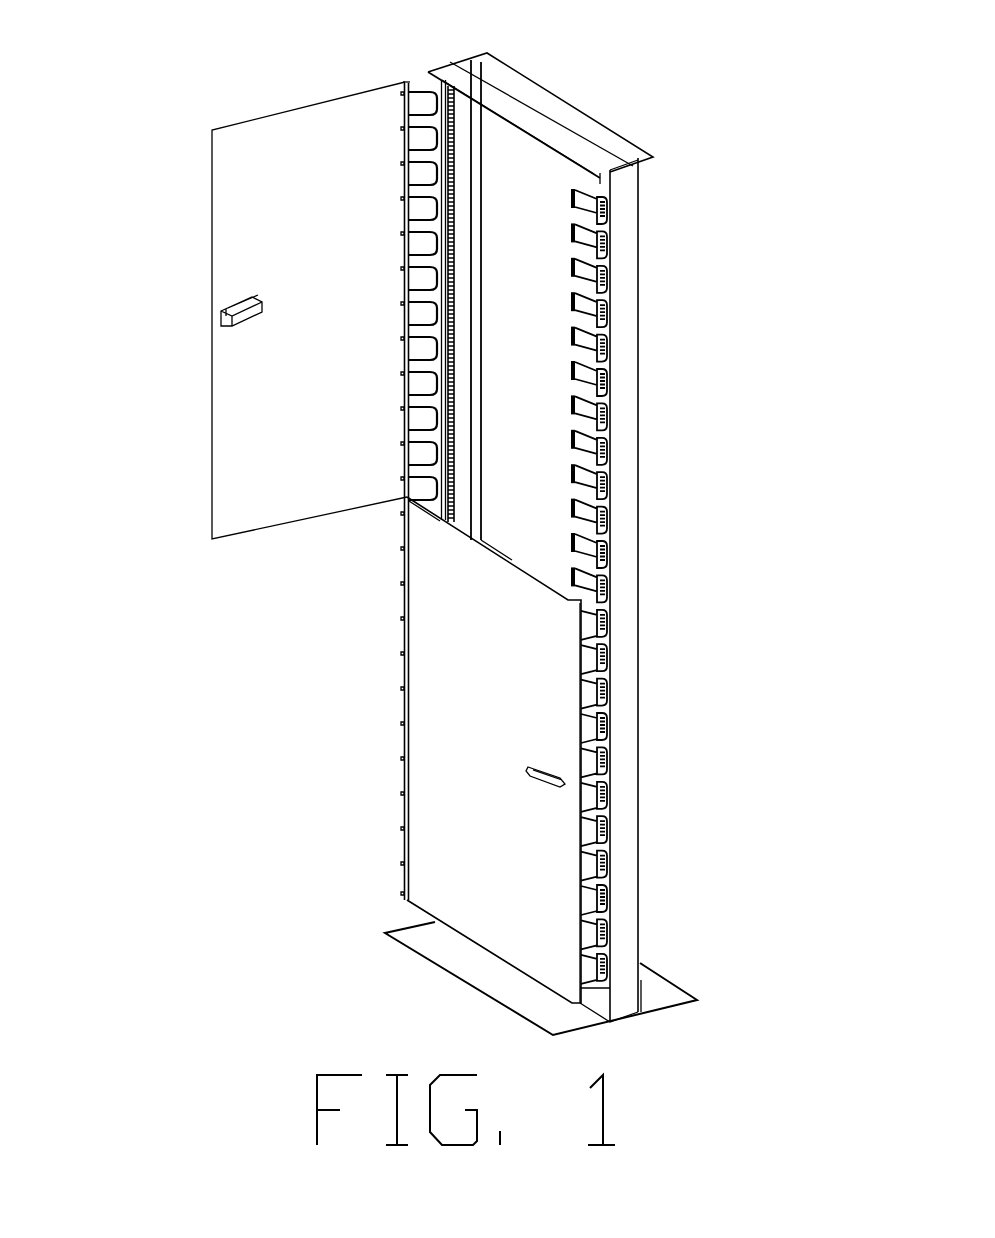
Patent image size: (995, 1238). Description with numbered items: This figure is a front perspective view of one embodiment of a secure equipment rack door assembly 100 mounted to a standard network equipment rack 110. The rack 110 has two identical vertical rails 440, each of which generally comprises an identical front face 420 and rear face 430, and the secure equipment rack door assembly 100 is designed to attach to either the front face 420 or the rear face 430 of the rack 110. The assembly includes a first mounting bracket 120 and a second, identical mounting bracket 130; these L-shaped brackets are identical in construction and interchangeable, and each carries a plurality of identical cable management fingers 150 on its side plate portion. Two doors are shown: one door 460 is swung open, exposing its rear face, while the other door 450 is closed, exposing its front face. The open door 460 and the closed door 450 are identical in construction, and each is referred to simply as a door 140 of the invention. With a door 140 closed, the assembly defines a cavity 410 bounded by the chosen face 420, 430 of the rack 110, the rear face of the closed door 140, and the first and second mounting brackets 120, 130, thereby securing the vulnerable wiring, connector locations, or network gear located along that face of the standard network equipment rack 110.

The secure equipment rack door assembly 100 is at (323, 716).
The standard network equipment rack 110 is at (562, 66).
The first mounting bracket 120 is at (418, 62).
The second mounting bracket 130 is at (628, 160).
The door 140 is at (531, 695).
The cable management fingers 150 is at (402, 262).
The cavity 410 is at (533, 273).
The front face 420 is at (410, 466).
The rear face 430 is at (482, 323).
The vertical rails 440 is at (627, 545).
The closed door 450 is at (460, 825).
The open door 460 is at (323, 184).